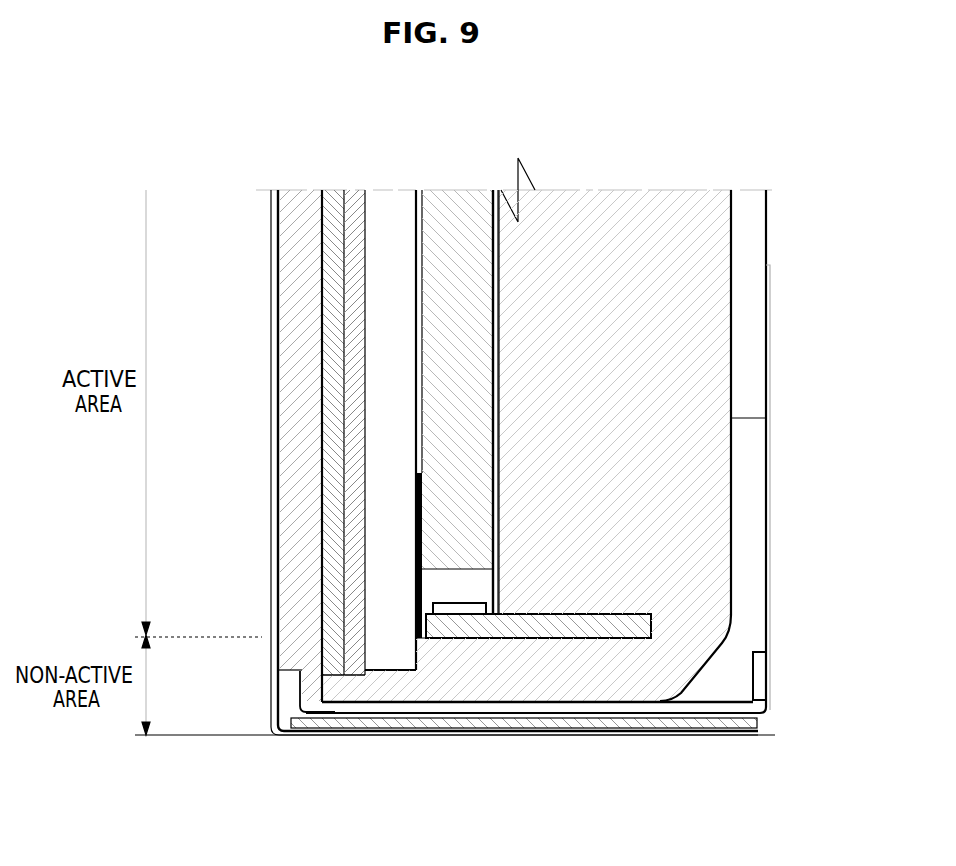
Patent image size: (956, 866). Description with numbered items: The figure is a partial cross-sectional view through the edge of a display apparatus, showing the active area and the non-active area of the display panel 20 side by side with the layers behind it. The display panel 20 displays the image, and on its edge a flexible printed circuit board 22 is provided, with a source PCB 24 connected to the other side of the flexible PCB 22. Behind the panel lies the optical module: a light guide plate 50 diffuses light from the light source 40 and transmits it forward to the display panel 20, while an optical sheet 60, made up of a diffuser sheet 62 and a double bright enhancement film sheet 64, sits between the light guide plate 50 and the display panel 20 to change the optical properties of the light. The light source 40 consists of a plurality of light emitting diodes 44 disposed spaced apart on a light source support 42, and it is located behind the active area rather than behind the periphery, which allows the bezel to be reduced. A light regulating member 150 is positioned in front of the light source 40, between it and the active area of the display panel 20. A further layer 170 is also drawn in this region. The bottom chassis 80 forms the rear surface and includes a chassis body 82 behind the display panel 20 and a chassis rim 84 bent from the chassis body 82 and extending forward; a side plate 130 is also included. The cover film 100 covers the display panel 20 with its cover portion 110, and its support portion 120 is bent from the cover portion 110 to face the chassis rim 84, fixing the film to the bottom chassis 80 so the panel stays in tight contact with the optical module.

The cover film 100 is at (460, 516).
The cover portion 110 is at (270, 352).
The support portion 120 is at (455, 736).
The display panel 20 is at (296, 598).
The flexible printed circuit board 22 is at (299, 690).
The source PCB 24 is at (750, 352).
The light guide plate 50 is at (427, 441).
The light regulating member 150 is at (419, 580).
The filling member 170 is at (392, 660).
The optical sheet 60 is at (353, 516).
The diffuser sheet 62 is at (355, 677).
The double bright enhancement film sheet 64 is at (337, 677).
The light source 40 is at (538, 722).
The light source support 42 is at (520, 630).
The light emitting diodes 44 is at (460, 608).
The bottom chassis 80 is at (546, 516).
The chassis body 82 is at (732, 557).
The chassis rim 84 is at (537, 715).
The side plate 130 is at (582, 705).